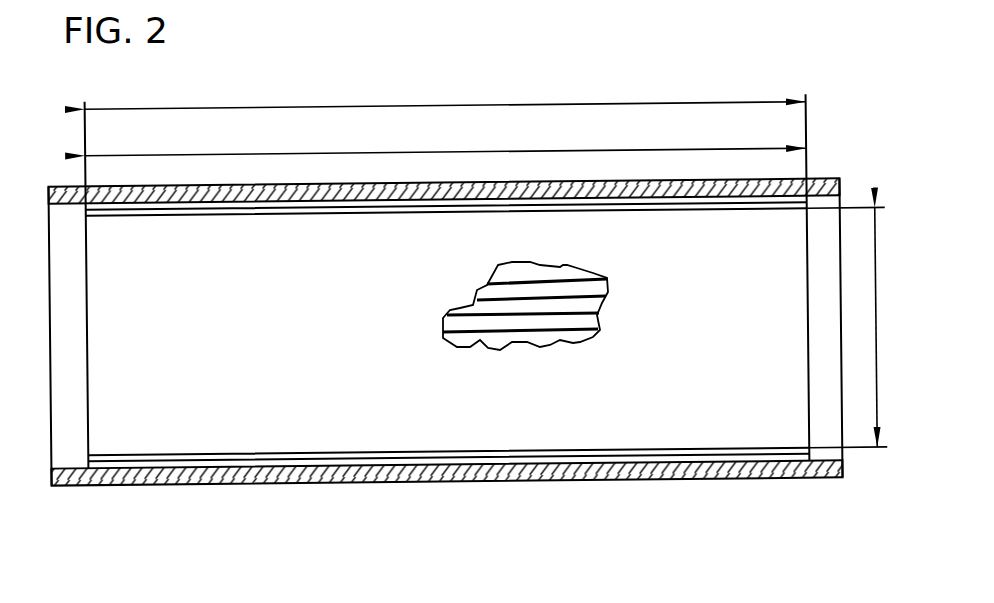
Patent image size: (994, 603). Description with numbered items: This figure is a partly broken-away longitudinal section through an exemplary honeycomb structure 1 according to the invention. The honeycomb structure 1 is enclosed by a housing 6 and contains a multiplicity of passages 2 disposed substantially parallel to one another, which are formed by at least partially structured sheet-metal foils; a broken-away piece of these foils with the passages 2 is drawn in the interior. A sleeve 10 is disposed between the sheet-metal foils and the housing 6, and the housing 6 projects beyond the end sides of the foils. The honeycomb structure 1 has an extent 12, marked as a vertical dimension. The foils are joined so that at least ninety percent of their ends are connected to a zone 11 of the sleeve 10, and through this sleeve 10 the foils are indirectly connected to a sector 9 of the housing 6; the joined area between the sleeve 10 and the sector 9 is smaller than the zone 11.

The honeycomb structure 1 is at (620, 430).
The passages 2 is at (550, 322).
The housing 6 is at (772, 478).
The sector of the housing 9 is at (448, 105).
The sleeve 10 is at (683, 463).
The zone of the sleeve 11 is at (448, 152).
The extent 12 is at (876, 322).